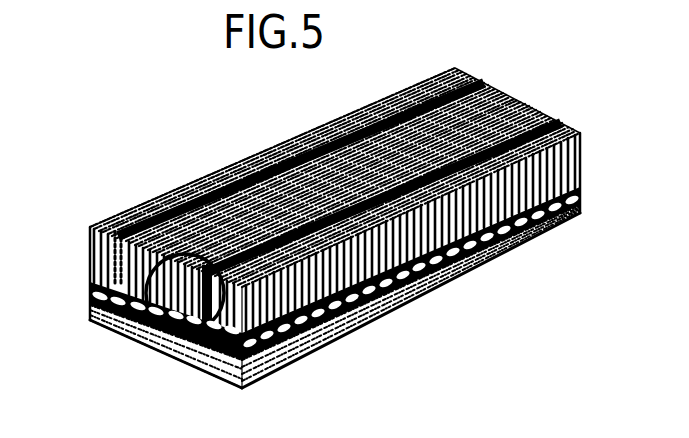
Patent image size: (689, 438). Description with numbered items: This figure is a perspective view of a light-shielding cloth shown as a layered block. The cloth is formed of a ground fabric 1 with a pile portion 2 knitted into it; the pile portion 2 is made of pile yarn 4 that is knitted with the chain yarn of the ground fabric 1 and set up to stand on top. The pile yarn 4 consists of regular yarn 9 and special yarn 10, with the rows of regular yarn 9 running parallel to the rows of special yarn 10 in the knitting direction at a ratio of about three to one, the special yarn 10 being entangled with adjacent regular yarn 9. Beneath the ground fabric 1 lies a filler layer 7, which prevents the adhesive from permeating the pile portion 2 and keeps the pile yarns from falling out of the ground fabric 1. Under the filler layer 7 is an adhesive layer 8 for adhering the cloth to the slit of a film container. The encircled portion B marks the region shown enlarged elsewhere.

The ground fabric 1 is at (75, 309).
The pile portion 2 is at (75, 263).
The pile yarn 4 is at (583, 153).
The filler layer 7 is at (113, 333).
The adhesive layer 8 is at (194, 368).
The regular yarn 9 is at (425, 95).
The special yarn 10 is at (532, 117).
The encircled portion B is at (158, 350).